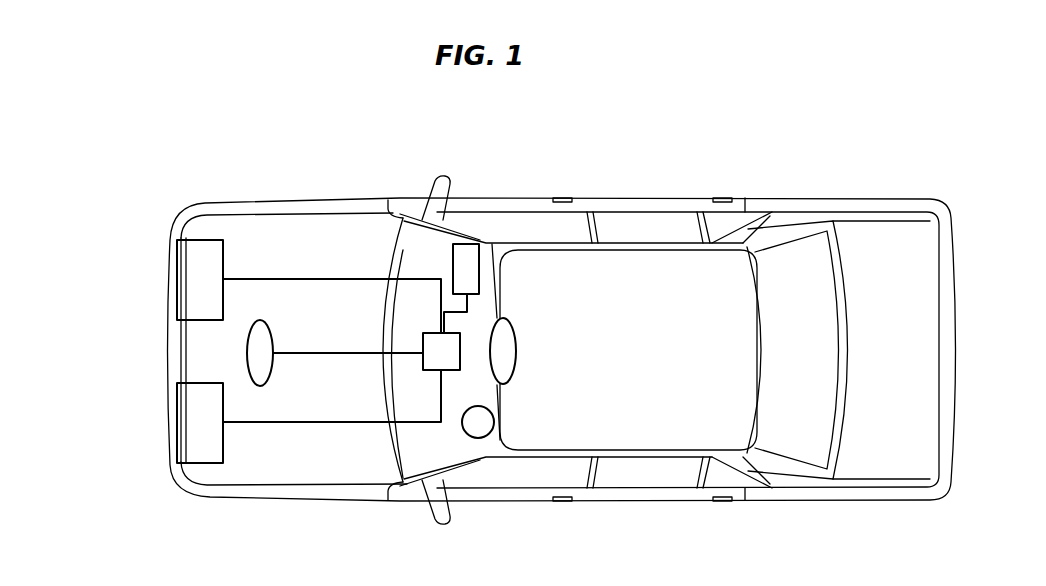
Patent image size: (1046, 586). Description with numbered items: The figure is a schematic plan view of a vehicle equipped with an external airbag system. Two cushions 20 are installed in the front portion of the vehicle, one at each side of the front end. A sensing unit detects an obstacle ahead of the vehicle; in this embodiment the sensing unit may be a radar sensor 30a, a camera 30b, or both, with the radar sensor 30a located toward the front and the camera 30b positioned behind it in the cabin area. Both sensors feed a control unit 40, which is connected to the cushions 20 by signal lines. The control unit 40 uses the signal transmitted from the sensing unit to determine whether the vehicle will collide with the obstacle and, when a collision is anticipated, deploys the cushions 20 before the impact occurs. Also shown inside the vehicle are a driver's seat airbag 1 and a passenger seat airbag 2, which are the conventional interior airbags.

The driver's seat airbag 1 is at (478, 428).
The passenger seat airbag 2 is at (467, 257).
The cushions 20 is at (190, 272).
The radar sensor 30a is at (247, 354).
The camera 30b is at (516, 350).
The control unit 40 is at (433, 343).